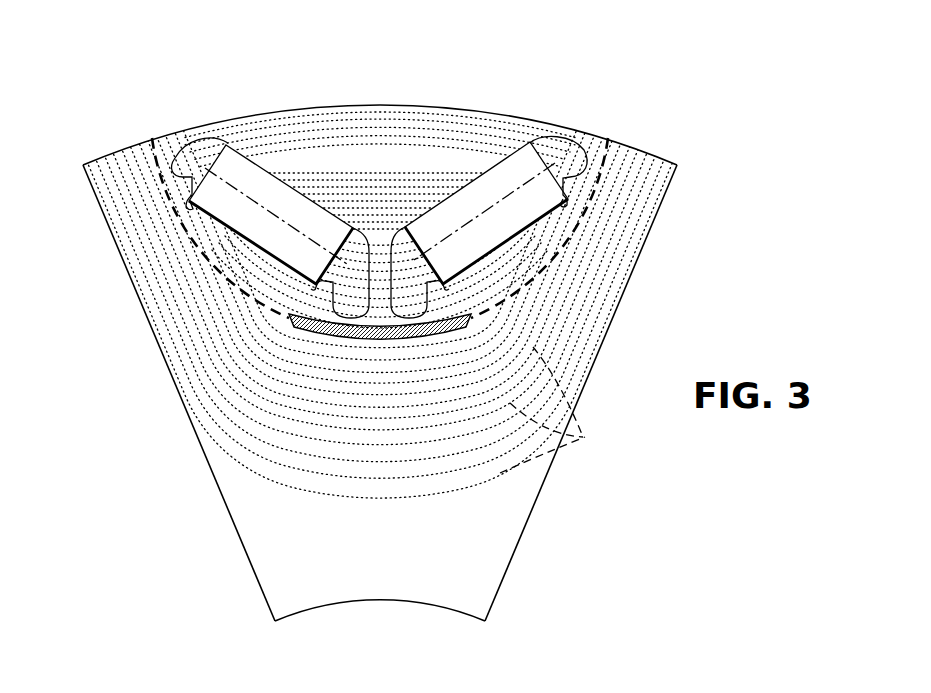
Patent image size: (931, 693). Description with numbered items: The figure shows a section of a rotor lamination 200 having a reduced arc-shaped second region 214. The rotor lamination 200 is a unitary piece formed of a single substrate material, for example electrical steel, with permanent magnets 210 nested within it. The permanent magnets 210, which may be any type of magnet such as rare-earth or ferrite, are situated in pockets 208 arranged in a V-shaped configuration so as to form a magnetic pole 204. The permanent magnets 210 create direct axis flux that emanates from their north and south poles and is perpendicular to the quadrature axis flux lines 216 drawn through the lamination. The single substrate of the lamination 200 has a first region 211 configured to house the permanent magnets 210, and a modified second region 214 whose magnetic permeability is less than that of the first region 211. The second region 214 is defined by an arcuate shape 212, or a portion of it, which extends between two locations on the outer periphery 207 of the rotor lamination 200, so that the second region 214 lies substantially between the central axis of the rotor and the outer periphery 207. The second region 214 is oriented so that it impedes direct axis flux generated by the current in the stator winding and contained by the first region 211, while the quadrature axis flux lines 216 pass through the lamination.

The rotor lamination 200 is at (592, 60).
The magnetic pole 204 is at (417, 97).
The outer periphery 207 is at (88, 165).
The pockets 208 is at (197, 158).
The permanent magnets 210 is at (277, 187).
The first region 211 is at (280, 577).
The arcuate shape 212 is at (600, 165).
The second region 214 is at (381, 338).
The quadrature axis flux lines 216 is at (380, 305).